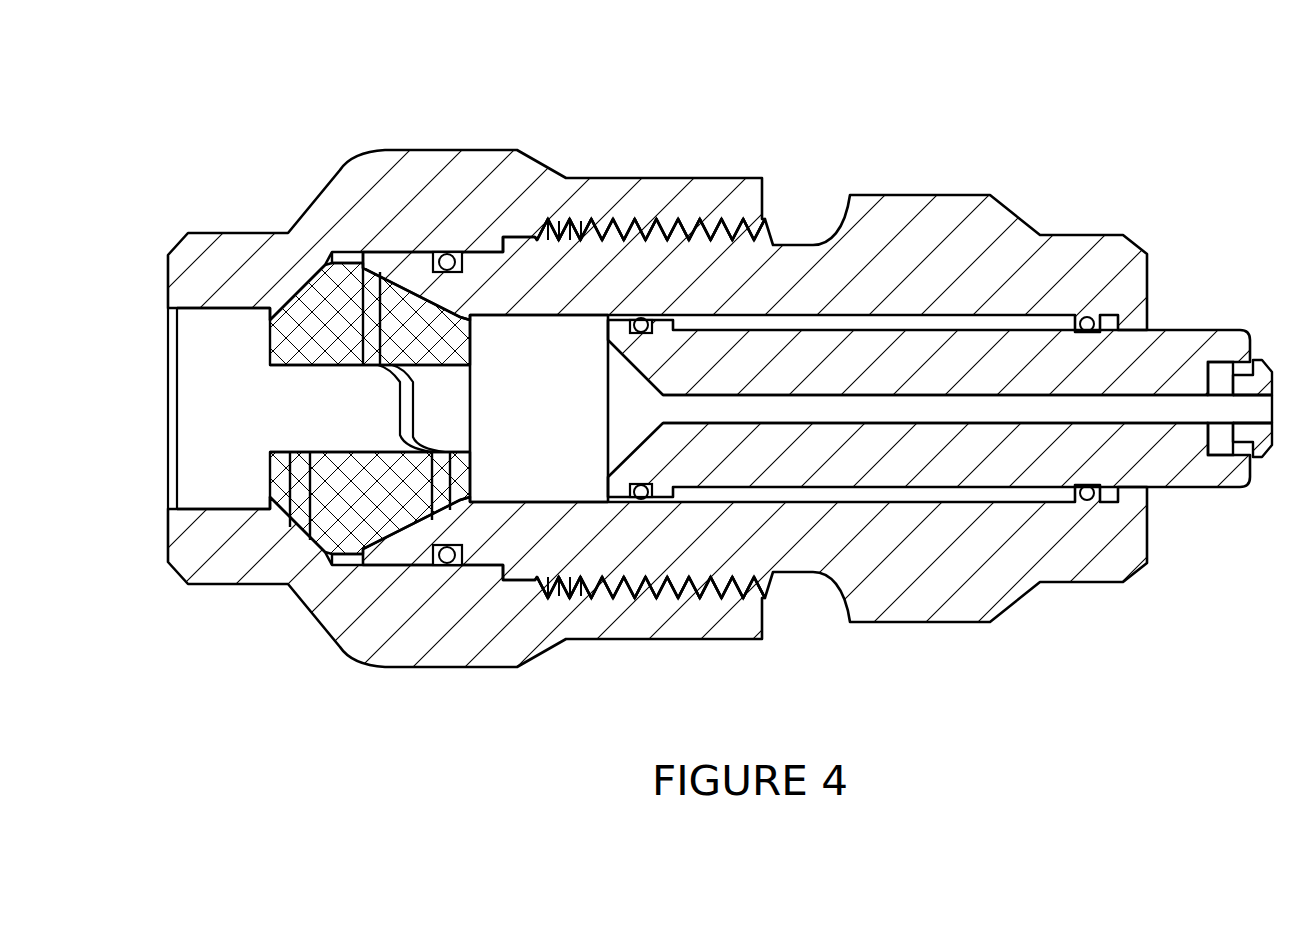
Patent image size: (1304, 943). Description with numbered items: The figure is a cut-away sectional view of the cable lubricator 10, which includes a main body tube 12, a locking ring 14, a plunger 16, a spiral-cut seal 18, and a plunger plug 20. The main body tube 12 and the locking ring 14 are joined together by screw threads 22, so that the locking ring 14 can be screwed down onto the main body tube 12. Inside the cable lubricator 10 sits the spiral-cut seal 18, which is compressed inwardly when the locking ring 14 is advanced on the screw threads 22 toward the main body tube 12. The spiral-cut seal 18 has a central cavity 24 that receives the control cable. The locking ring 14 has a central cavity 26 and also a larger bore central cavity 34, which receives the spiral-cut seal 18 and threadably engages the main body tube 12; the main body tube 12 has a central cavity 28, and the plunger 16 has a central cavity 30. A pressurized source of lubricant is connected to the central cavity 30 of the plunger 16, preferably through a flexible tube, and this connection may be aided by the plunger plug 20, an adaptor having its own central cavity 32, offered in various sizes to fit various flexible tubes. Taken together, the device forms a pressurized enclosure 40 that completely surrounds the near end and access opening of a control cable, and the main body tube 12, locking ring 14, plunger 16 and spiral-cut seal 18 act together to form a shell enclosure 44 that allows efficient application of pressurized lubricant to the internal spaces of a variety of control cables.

The cable lubricator 10 is at (705, 377).
The pressurized enclosure 40 is at (705, 377).
The shell enclosure 44 is at (290, 138).
The main body tube 12 is at (755, 411).
The locking ring 14 is at (377, 627).
The plunger 16 is at (940, 438).
The spiral-cut seal 18 is at (349, 369).
The plunger plug 20 is at (1249, 378).
The screw threads 22 is at (768, 228).
The central cavity 24 is at (372, 415).
The central cavity 26 is at (222, 424).
The central cavity 28 is at (540, 419).
The central cavity 30 is at (780, 417).
The central cavity 32 is at (1230, 405).
The larger bore central cavity 34 is at (333, 245).